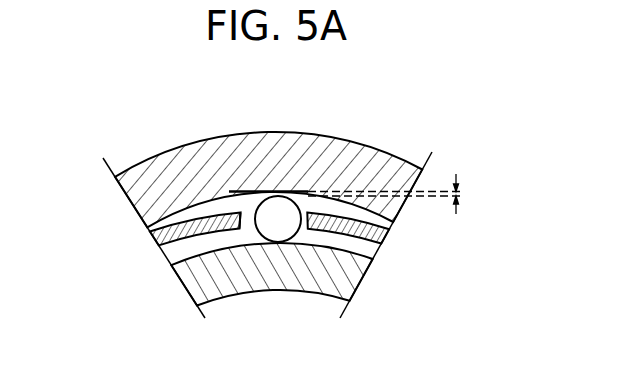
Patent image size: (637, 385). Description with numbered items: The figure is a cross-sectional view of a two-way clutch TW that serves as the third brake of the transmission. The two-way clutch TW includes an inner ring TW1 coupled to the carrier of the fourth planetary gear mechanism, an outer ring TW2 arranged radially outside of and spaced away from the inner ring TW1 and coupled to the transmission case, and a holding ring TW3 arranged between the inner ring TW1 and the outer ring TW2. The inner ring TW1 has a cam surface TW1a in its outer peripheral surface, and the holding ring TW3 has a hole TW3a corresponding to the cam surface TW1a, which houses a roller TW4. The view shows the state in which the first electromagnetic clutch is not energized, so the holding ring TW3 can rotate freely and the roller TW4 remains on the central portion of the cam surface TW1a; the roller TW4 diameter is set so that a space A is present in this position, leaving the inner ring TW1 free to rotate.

The two-way clutch TW is at (156, 141).
The inner ring TW1 is at (317, 200).
The cam surface TW1a is at (318, 192).
The outer ring TW2 is at (372, 172).
The holding ring TW3 is at (160, 231).
The hole TW3a is at (258, 228).
The roller TW4 is at (268, 212).
The space A is at (457, 194).